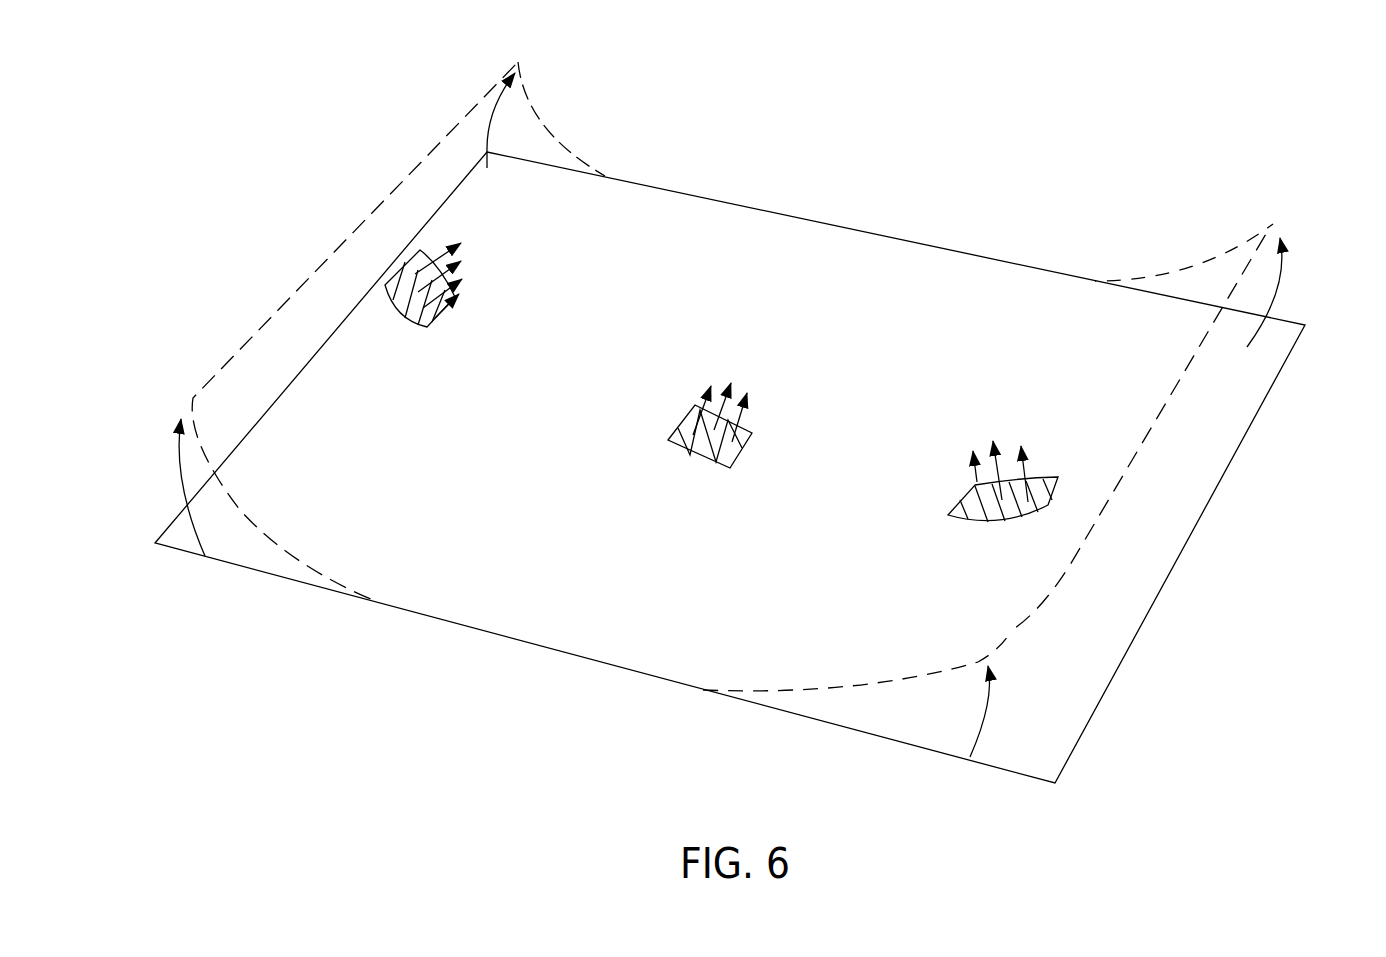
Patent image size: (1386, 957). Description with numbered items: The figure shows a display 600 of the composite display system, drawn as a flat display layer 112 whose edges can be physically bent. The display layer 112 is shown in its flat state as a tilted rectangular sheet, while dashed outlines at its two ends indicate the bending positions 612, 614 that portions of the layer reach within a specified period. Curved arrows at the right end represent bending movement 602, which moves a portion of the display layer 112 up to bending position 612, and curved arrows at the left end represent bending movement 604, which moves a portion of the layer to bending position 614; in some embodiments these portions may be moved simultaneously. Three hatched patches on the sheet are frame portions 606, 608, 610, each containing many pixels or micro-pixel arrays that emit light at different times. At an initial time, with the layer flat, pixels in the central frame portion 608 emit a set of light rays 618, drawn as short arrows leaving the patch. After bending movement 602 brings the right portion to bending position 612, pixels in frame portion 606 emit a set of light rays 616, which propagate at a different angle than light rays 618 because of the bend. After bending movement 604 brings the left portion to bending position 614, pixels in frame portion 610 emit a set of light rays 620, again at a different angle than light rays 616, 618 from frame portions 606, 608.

The display 600 is at (1253, 141).
The display layer 112 is at (1150, 613).
The bending movement 602 is at (1282, 280).
The bending movement 604 is at (493, 118).
The frame portion 606 is at (983, 523).
The frame portion 608 is at (693, 453).
The frame portion 610 is at (400, 310).
The bending position 612 is at (1207, 262).
The bending position 614 is at (425, 157).
The set of light rays 616 is at (1023, 472).
The set of light rays 618 is at (740, 417).
The set of light rays 620 is at (434, 256).